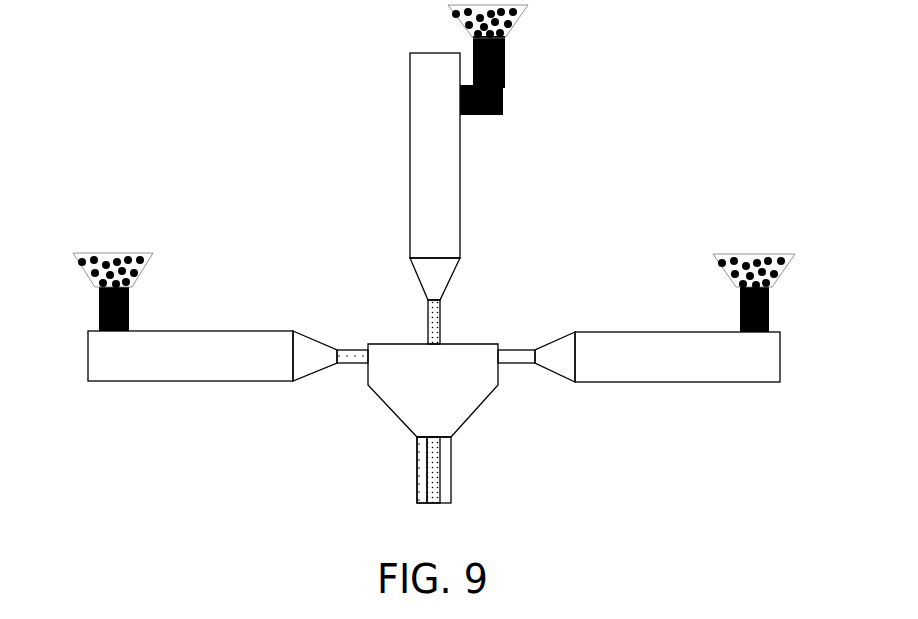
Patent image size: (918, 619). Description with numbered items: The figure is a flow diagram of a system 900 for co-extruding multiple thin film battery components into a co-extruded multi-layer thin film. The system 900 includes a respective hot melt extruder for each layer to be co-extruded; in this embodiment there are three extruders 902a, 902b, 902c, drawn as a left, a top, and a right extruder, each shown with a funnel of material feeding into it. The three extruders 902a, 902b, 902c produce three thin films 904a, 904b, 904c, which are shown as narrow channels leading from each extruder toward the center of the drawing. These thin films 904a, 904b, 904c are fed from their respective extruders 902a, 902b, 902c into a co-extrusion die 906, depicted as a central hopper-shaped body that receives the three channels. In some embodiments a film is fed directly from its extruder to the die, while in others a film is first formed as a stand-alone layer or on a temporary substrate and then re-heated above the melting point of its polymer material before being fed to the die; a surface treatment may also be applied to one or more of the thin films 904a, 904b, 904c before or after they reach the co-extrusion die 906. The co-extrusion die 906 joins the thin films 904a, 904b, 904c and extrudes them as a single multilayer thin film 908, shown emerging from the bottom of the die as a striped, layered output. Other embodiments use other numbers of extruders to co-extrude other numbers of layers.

The system for co-extruding multiple layers 900 is at (140, 24).
The extruder 902a is at (117, 381).
The extruder 902b is at (410, 112).
The extruder 902c is at (692, 382).
The thin film 904a is at (357, 349).
The thin film 904b is at (430, 320).
The thin film 904c is at (520, 350).
The co-extrusion die 906 is at (392, 411).
The multilayer thin film 908 is at (417, 475).